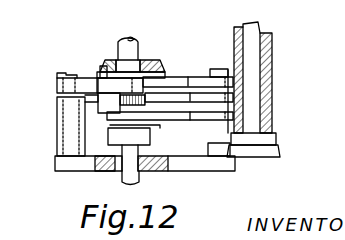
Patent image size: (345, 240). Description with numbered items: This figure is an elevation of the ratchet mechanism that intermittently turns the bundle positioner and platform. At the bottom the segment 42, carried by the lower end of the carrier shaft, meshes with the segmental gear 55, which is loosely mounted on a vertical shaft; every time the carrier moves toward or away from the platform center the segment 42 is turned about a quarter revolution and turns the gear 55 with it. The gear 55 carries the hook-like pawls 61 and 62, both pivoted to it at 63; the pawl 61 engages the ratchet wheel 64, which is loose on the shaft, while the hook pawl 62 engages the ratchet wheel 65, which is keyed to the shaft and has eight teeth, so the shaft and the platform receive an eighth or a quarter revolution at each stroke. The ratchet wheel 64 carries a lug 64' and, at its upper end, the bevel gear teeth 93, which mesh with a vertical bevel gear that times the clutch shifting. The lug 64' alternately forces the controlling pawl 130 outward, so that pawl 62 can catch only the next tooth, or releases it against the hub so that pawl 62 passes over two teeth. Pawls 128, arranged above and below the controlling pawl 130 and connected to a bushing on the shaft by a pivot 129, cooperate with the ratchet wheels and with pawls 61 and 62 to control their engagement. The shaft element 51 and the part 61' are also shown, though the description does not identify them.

The pawls 128 is at (203, 77).
The pivot 129 is at (232, 101).
The controlling pawl 130 is at (203, 120).
The lug 64' is at (188, 63).
The ratchet wheel 64 is at (160, 57).
The hook pawl 62 is at (80, 111).
The pawl 61 is at (79, 67).
The pivot 63 is at (66, 73).
The pin 61' is at (91, 39).
The shaft 51 is at (138, 42).
The bevel gear teeth 93 is at (150, 62).
The ratchet wheel 65 is at (115, 132).
The segment 42 is at (179, 171).
The segmental gear 55 is at (139, 183).